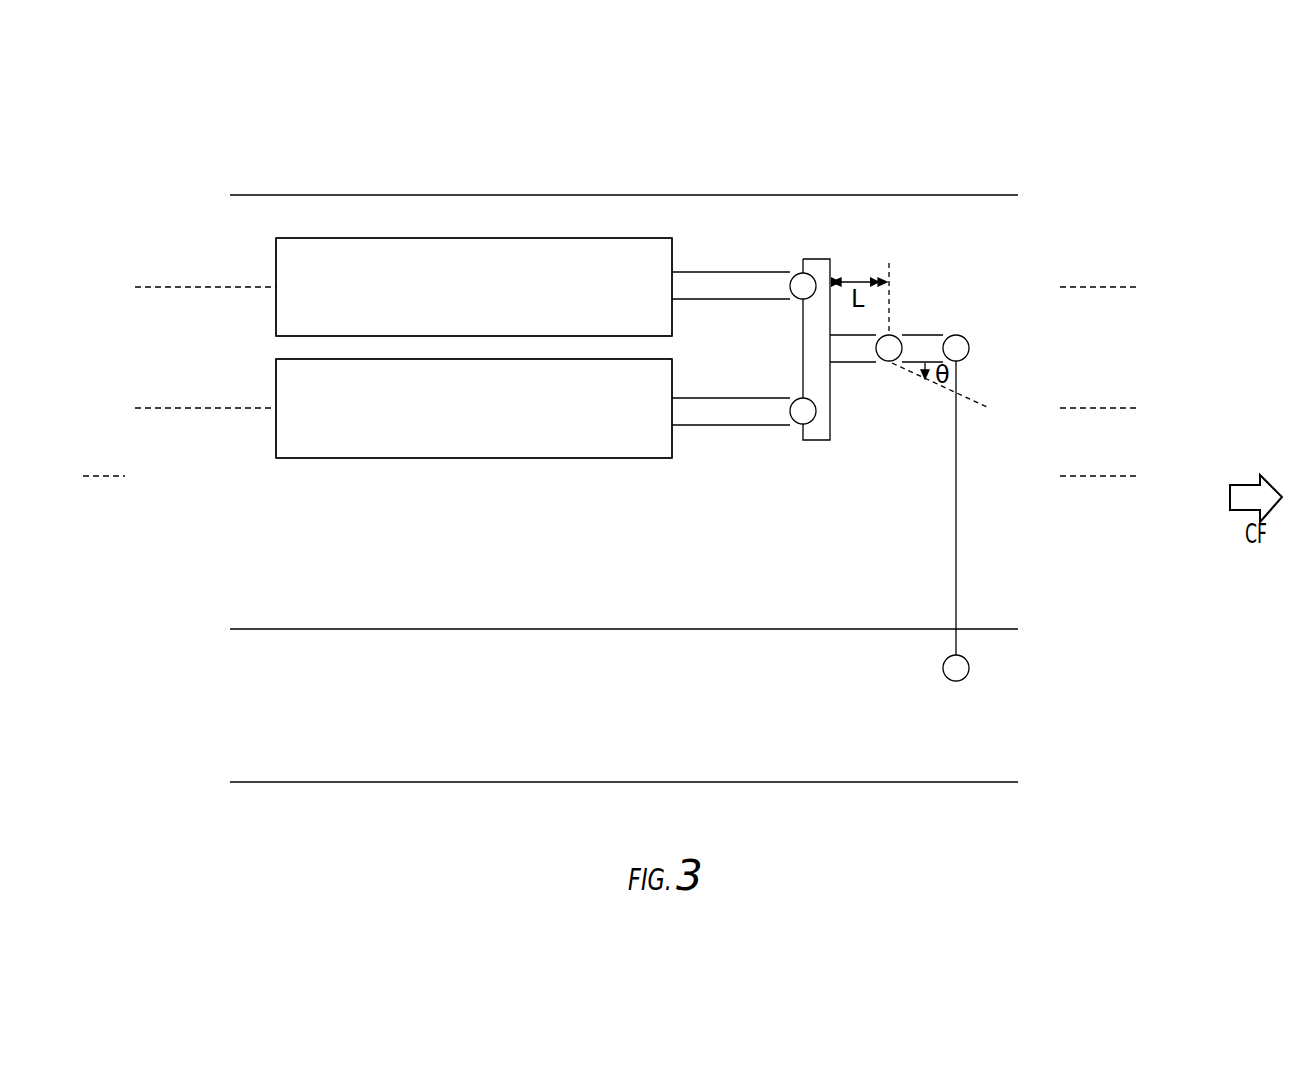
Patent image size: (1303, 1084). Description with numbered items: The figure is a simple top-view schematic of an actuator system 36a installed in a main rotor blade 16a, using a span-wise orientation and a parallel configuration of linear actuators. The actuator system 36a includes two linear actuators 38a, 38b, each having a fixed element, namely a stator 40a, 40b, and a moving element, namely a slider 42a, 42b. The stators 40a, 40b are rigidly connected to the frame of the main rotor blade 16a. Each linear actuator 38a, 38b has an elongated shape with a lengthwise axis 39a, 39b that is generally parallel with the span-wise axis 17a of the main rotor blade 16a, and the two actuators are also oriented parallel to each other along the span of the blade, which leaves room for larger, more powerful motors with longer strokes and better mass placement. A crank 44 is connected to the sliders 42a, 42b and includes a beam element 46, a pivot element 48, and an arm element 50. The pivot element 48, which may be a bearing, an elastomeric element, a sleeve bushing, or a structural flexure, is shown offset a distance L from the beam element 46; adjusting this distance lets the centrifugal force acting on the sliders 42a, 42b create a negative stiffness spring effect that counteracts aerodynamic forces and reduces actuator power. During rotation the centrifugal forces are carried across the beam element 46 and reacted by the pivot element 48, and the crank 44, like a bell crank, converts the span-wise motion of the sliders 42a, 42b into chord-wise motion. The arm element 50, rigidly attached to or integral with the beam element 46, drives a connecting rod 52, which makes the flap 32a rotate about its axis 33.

The main rotor blade 16a is at (945, 230).
The span-wise axis 17a is at (610, 474).
The flap 32a is at (263, 753).
The axis 33 is at (1060, 673).
The actuator system 36a is at (231, 387).
The linear actuator 38a is at (641, 230).
The linear actuator 38b is at (641, 473).
The lengthwise axis 39a is at (639, 284).
The lengthwise axis 39b is at (639, 407).
The stator 40a is at (276, 270).
The stator 40b is at (283, 433).
The slider 42a is at (730, 283).
The slider 42b is at (729, 408).
The crank 44 is at (869, 419).
The beam element 46 is at (805, 343).
The pivot element 48 is at (890, 345).
The arm element 50 is at (923, 348).
The connecting rod 52 is at (957, 488).